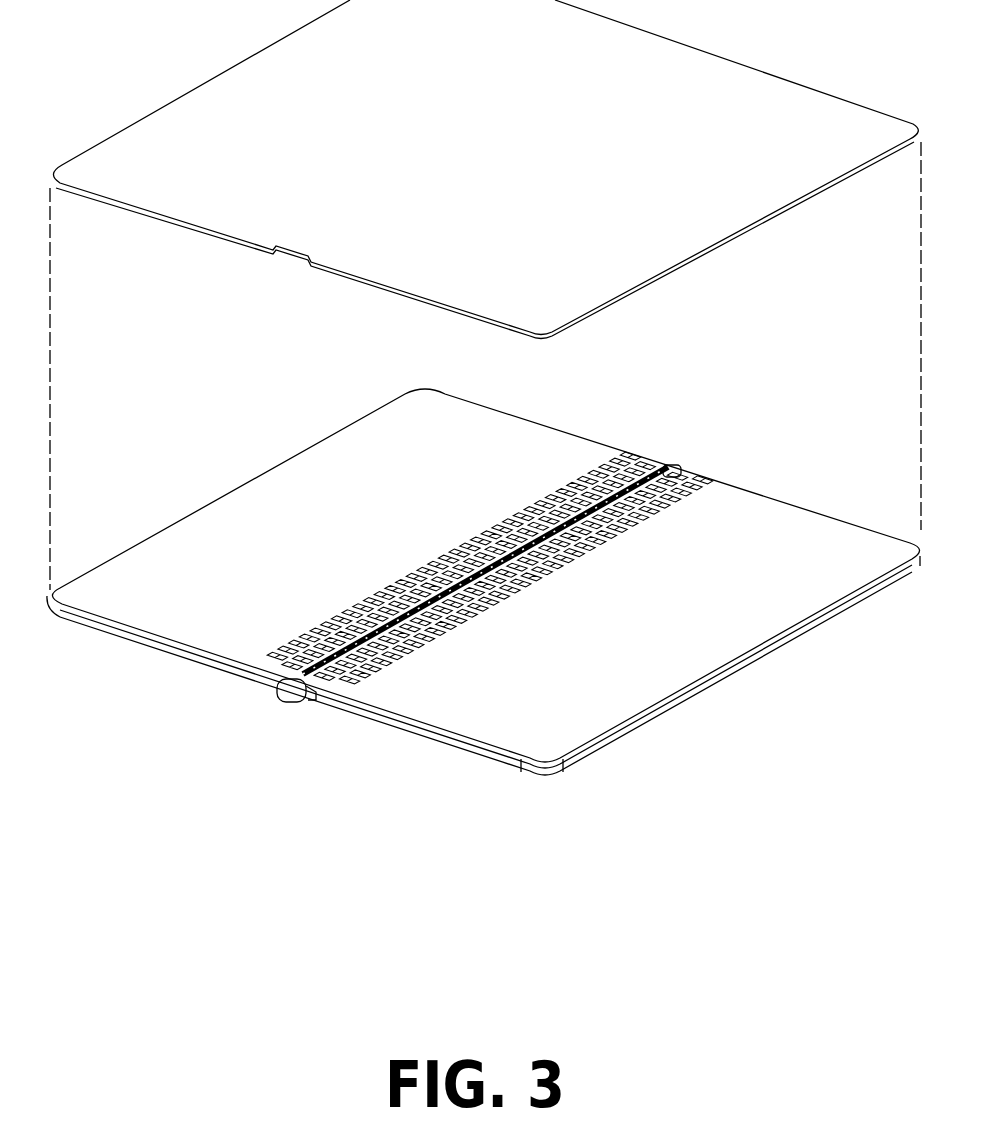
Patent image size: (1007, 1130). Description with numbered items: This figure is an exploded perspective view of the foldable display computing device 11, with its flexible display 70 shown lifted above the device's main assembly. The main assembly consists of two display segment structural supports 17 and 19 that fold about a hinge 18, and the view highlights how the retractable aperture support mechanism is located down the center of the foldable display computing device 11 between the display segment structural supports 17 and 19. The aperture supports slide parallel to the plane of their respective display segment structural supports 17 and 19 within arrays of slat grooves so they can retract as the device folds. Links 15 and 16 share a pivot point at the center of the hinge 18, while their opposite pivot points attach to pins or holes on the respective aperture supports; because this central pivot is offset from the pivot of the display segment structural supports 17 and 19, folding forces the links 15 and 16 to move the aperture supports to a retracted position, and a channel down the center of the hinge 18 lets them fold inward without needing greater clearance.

The foldable display computing device 11 is at (812, 430).
The link 15 is at (276, 690).
The link 16 is at (312, 701).
The display segment structural support 17 is at (163, 538).
The hinge 18 is at (678, 467).
The display segment structural support 19 is at (845, 596).
The flexible display 70 is at (163, 122).